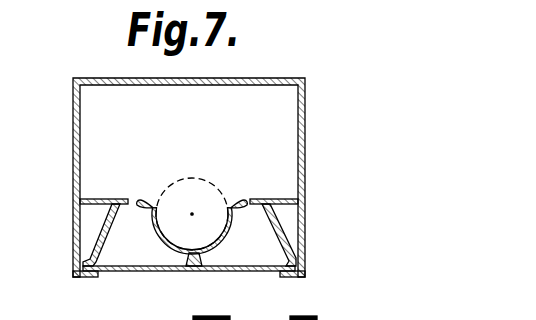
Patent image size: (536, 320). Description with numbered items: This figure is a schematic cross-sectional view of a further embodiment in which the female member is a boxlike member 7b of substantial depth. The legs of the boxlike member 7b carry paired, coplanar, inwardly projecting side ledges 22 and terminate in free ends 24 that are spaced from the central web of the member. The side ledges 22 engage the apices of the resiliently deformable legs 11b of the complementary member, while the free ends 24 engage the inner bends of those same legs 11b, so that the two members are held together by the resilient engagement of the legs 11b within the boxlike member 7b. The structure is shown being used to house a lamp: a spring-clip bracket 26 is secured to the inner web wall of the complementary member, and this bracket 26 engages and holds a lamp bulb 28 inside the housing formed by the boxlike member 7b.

The boxlike member 7b is at (80, 126).
The side ledges 22 is at (103, 197).
The free ends 24 is at (92, 278).
The resiliently deformable legs 11b is at (102, 227).
The spring-clip bracket 26 is at (162, 239).
The lamp bulb 28 is at (190, 175).